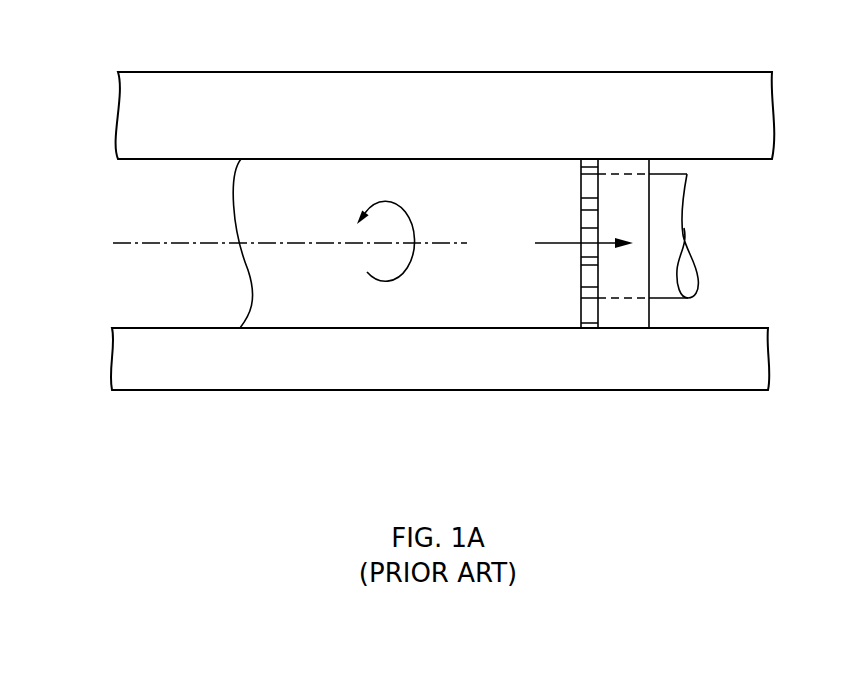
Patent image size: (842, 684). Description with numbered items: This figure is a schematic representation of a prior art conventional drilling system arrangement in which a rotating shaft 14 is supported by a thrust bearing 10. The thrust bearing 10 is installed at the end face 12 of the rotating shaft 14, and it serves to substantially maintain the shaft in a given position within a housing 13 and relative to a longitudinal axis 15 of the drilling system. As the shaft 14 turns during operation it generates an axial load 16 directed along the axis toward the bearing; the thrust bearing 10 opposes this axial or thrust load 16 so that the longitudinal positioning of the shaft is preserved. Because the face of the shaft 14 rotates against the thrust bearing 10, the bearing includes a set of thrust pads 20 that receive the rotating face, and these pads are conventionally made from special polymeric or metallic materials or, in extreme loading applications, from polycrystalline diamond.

The thrust bearing 10 is at (625, 159).
The end face 12 is at (552, 128).
The housing 13 is at (210, 72).
The rotating shaft 14 is at (377, 159).
The longitudinal axis 15 is at (140, 243).
The axial load 16 is at (535, 243).
The thrust pads 20 is at (593, 344).